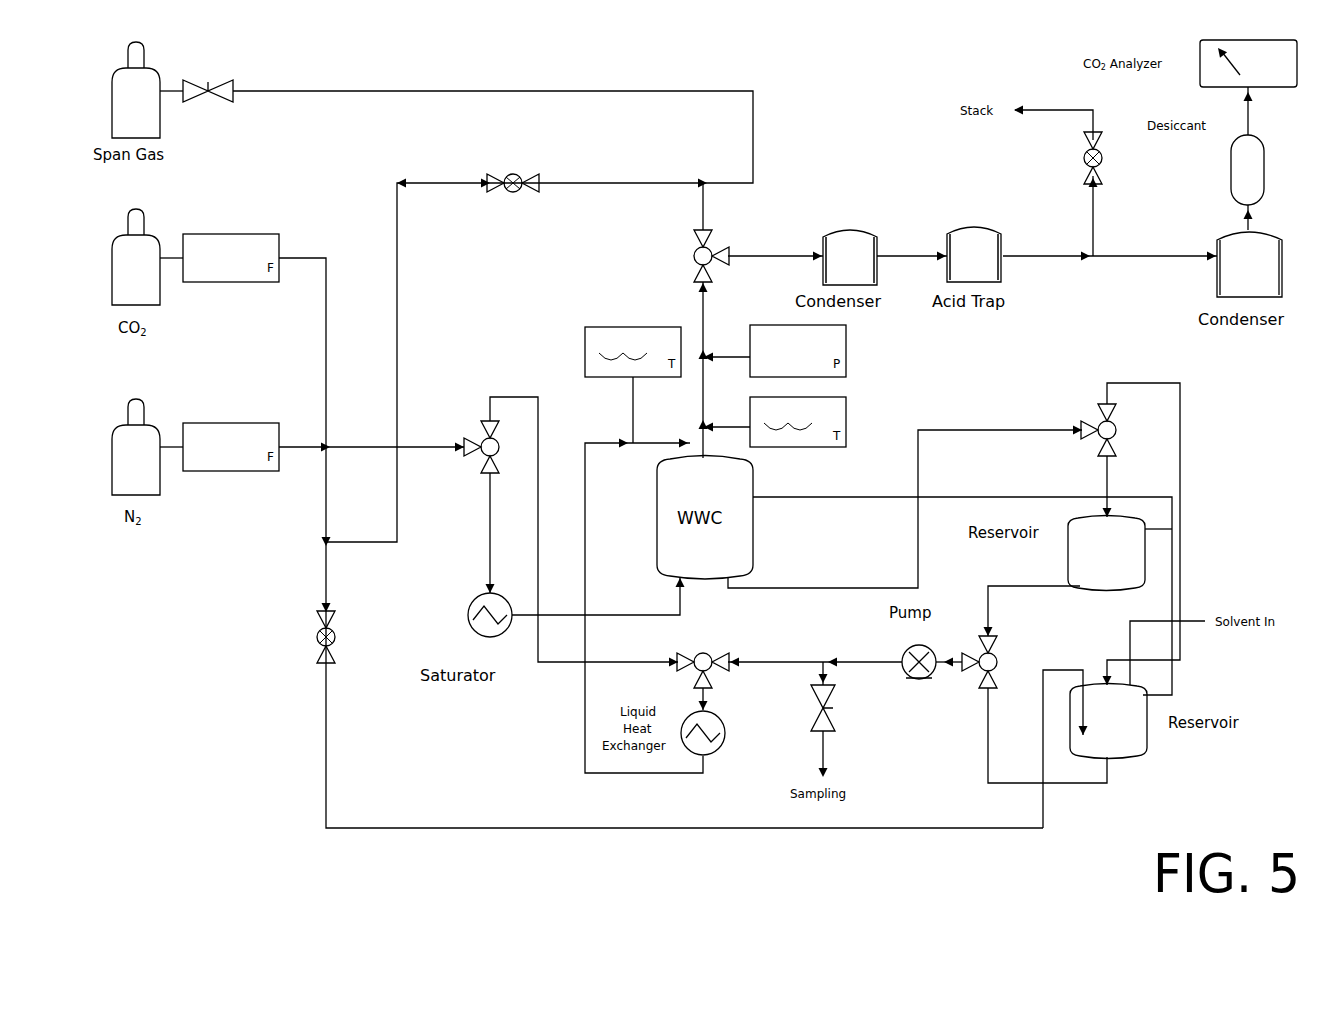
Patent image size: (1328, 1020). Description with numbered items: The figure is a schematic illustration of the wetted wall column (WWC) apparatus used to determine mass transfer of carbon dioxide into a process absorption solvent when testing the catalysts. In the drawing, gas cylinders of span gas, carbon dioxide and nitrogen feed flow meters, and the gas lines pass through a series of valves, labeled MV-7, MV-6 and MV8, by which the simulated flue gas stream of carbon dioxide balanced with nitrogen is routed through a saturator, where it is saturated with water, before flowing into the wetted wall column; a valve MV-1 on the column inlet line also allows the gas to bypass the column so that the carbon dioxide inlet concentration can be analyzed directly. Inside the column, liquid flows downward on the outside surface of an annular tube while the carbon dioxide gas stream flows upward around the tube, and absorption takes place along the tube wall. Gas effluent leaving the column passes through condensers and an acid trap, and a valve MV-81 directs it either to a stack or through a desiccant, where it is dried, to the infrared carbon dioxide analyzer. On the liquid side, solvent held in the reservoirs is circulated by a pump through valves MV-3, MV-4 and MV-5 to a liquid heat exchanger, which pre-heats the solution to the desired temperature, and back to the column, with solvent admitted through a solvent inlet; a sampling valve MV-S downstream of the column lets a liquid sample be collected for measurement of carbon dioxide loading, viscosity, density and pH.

The three-way valve MV-1 is at (692, 256).
The three-way valve MV-3 is at (1119, 430).
The three-way valve MV-4 is at (998, 662).
The three-way valve MV-5 is at (703, 659).
The three-way valve MV-6 is at (469, 438).
The valve MV-7 is at (510, 202).
The valve MV8 is at (306, 637).
The valve MV-81 is at (1068, 158).
The sampling valve MV-S is at (846, 719).